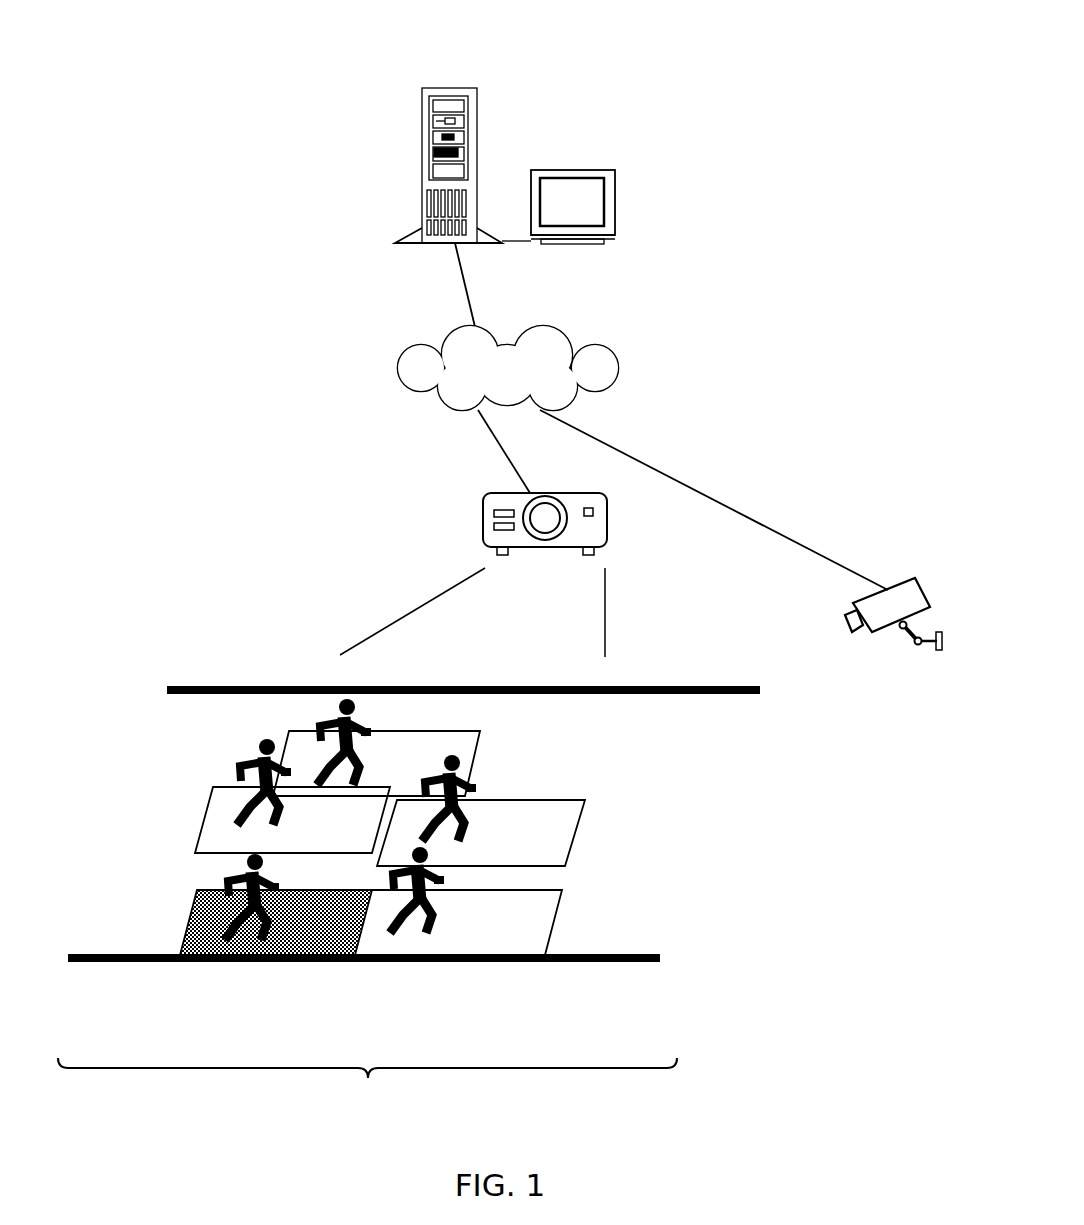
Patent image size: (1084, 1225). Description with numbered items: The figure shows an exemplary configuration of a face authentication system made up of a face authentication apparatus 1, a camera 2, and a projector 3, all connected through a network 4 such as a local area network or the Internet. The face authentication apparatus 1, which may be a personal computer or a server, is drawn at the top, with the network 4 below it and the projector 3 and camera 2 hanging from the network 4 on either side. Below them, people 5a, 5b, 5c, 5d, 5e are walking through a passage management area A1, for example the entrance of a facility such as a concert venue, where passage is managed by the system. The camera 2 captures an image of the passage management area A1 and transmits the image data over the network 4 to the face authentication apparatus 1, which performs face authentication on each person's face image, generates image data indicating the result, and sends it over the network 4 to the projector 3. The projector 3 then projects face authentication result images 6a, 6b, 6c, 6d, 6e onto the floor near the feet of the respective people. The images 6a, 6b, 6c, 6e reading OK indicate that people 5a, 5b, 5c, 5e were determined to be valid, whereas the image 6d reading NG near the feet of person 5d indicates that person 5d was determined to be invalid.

The face authentication apparatus 1 is at (450, 87).
The camera 2 is at (890, 633).
The projector 3 is at (548, 550).
The network 4 is at (549, 327).
The person 5a is at (262, 740).
The person 5b is at (340, 705).
The person 5c is at (452, 756).
The person 5d is at (228, 963).
The person 5e is at (400, 960).
The face authentication result image 6a is at (203, 815).
The face authentication result image 6b is at (480, 742).
The face authentication result image 6c is at (585, 830).
The face authentication result image 6d is at (188, 918).
The face authentication result image 6e is at (562, 915).
The passage management area A1 is at (367, 1089).